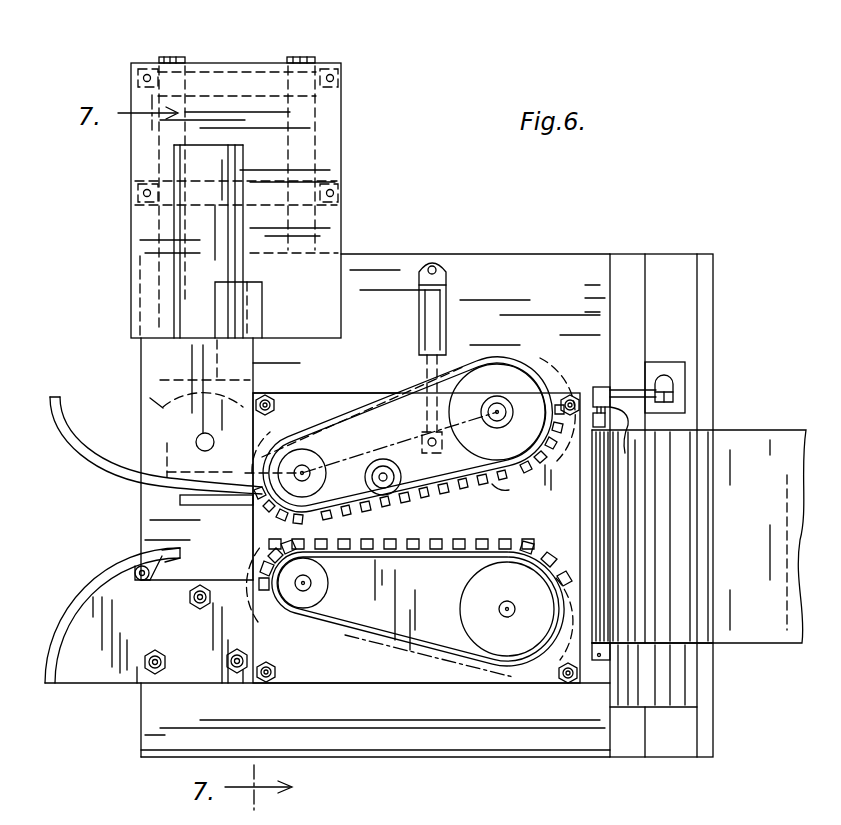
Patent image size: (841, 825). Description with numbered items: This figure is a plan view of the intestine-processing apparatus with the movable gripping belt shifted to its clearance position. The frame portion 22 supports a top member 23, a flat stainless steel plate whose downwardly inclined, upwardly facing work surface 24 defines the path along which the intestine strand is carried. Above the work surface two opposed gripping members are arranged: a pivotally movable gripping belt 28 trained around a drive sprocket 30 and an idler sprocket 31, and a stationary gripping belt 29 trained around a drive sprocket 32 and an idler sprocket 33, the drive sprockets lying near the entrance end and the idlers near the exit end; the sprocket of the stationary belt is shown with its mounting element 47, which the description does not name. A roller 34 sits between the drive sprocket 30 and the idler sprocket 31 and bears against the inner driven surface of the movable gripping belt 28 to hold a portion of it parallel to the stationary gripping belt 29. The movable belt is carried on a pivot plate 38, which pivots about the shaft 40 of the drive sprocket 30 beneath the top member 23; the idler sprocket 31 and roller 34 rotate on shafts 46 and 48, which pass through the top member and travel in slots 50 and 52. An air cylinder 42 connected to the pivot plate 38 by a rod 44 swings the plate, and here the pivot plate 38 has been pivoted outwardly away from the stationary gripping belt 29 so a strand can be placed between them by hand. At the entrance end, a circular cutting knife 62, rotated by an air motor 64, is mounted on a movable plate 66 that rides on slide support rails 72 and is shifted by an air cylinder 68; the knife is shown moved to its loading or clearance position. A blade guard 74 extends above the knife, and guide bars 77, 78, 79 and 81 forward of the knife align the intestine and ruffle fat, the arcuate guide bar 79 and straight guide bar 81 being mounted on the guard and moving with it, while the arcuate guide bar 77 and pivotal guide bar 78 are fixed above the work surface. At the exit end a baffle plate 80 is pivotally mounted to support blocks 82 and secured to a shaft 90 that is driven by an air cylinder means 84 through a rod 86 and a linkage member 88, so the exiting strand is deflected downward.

The frame portion 22 is at (543, 262).
The top member 23 is at (370, 690).
The work surface 24 is at (416, 538).
The pivotally movable gripping belt 28 is at (493, 357).
The stationary gripping belt 29 is at (418, 552).
The drive sprocket 30 is at (296, 460).
The idler sprocket 31 is at (553, 432).
The drive sprocket 32 is at (312, 588).
The idler sprocket 33 is at (474, 618).
The roller 34 is at (383, 481).
The pivot plate 38 is at (372, 413).
The shaft 40 is at (292, 476).
The air cylinder 42 is at (440, 306).
The rod 44 is at (420, 362).
The shaft 46 is at (500, 408).
The lower pulley shaft 47 is at (303, 592).
The shaft 48 is at (430, 500).
The slot 50 is at (500, 490).
The slot 52 is at (360, 510).
The circular cutting knife 62 is at (170, 412).
The air motor 64 is at (188, 276).
The movable plate 66 is at (132, 153).
The air cylinder 68 is at (248, 306).
The slide support rails 72 is at (298, 57).
The blade guard 74 is at (155, 446).
The arcuate guide bar 77 is at (60, 632).
The pivotal guide bar 78 is at (160, 560).
The arcuate guide bar 79 is at (68, 450).
The baffle plate 80 is at (768, 542).
The straight guide bar 81 is at (214, 507).
The support blocks 82 is at (596, 398).
The air cylinder means 84 is at (686, 372).
The rod 86 is at (674, 397).
The linkage member 88 is at (625, 393).
The shaft 90 is at (634, 438).